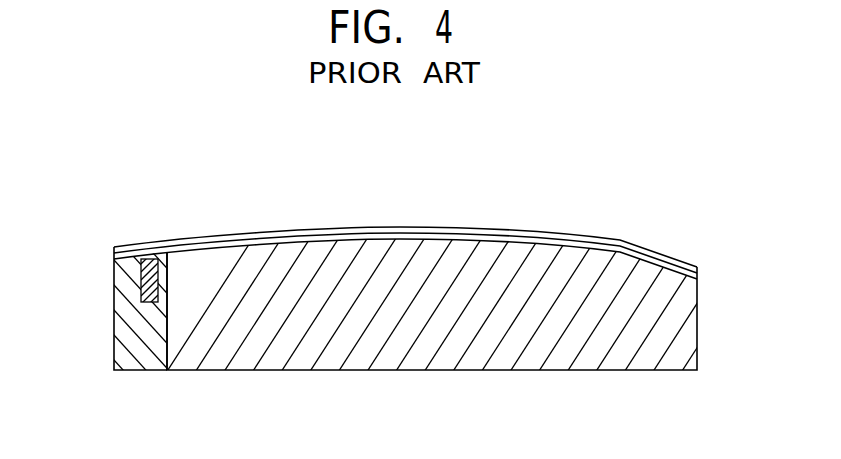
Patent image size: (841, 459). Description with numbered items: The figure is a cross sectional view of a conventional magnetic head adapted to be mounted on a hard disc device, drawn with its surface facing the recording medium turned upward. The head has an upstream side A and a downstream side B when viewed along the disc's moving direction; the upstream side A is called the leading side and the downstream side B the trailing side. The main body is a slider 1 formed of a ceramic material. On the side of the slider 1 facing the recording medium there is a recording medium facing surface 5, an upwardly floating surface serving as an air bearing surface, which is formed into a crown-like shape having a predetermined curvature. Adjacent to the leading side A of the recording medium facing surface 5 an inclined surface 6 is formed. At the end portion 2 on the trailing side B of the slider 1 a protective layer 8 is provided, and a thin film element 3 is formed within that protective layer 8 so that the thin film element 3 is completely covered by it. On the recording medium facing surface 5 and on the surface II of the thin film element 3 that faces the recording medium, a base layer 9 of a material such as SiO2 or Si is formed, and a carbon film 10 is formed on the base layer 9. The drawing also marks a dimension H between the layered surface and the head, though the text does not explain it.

The slider 1 is at (352, 344).
The end portion 2 is at (160, 357).
The thin film element 3 is at (148, 270).
The recording medium facing surface 5 is at (390, 229).
The inclined surface 6 is at (668, 272).
The protective layer 8 is at (121, 282).
The base layer 9 is at (320, 237).
The carbon film 10 is at (262, 236).
The height step H is at (577, 225).
The upstream side A is at (724, 320).
The downstream side B is at (86, 314).
The surface II is at (145, 198).